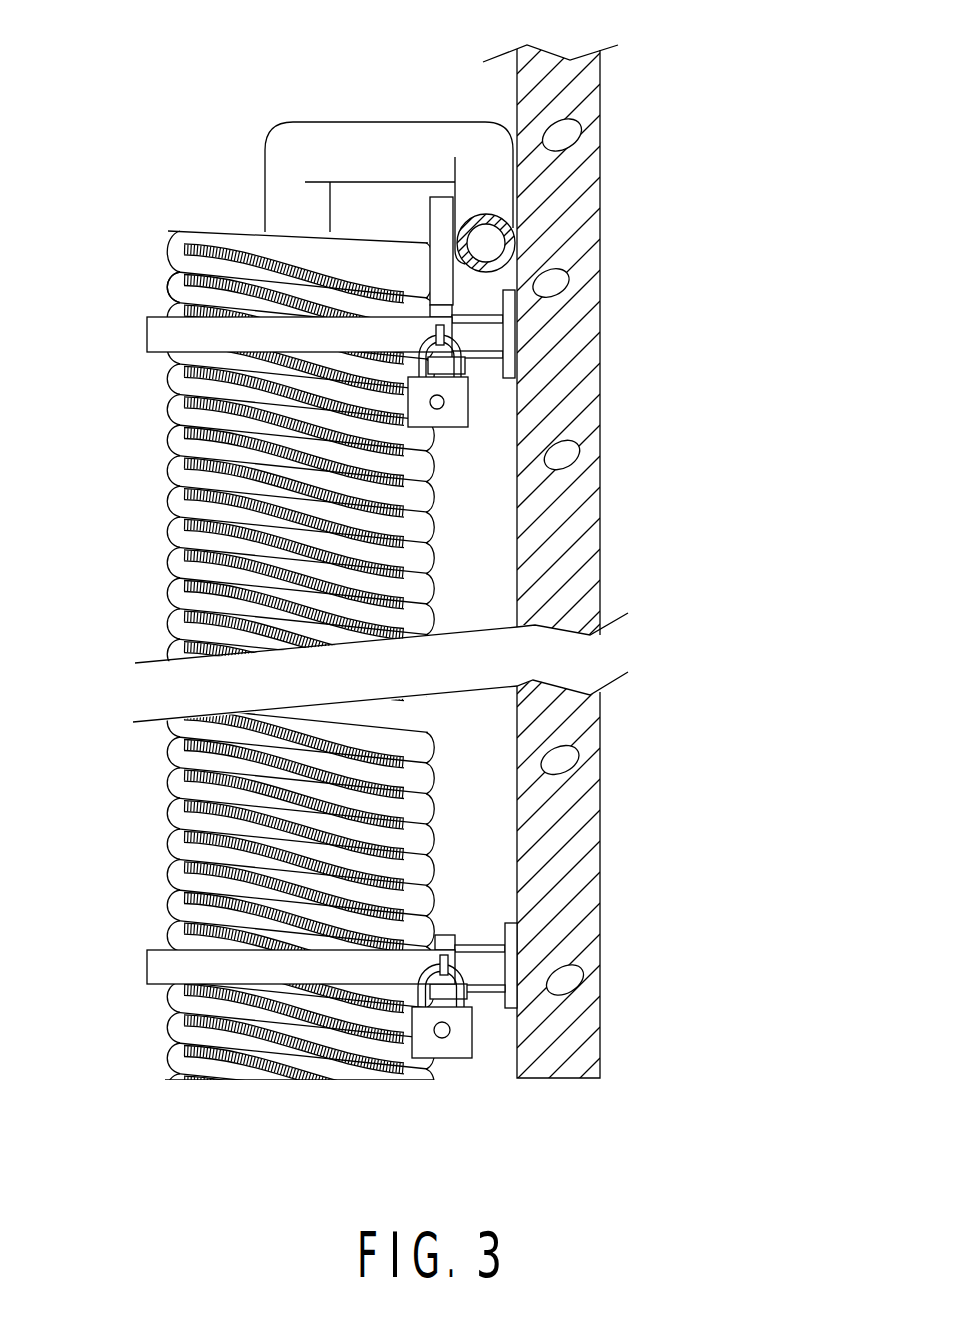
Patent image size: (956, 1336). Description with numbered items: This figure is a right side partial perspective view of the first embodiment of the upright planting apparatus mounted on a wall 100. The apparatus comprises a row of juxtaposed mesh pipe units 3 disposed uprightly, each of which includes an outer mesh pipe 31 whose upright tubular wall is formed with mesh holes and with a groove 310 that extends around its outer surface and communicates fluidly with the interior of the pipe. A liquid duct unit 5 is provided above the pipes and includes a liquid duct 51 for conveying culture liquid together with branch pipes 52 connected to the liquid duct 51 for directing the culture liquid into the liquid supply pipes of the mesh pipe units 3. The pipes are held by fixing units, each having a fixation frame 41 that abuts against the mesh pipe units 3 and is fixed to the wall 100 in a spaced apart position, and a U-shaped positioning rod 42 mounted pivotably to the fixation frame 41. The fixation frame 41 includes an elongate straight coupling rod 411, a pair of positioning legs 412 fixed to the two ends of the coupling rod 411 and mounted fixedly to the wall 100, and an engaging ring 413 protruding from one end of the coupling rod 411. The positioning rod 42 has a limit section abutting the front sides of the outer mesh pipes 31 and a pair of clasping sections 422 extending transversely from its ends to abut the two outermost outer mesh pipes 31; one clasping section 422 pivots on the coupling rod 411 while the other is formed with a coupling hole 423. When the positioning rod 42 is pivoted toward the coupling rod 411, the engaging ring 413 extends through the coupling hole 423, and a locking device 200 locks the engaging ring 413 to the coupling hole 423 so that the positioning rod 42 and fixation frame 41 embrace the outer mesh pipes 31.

The mesh pipe unit 3 is at (248, 683).
The outer mesh pipe 31 is at (168, 500).
The groove 310 is at (175, 262).
The liquid duct unit 5 is at (471, 155).
The branch pipe 52 is at (383, 138).
The liquid duct 51 is at (487, 213).
The wall 100 is at (590, 168).
The fixation frame 41 is at (564, 602).
The coupling rod 411 is at (444, 307).
The positioning leg 412 is at (490, 350).
The engaging ring 413 is at (468, 380).
The clasping section 422 is at (212, 333).
The positioning rod 42 is at (158, 966).
The coupling hole 423 is at (490, 325).
The locking device 200 is at (547, 728).